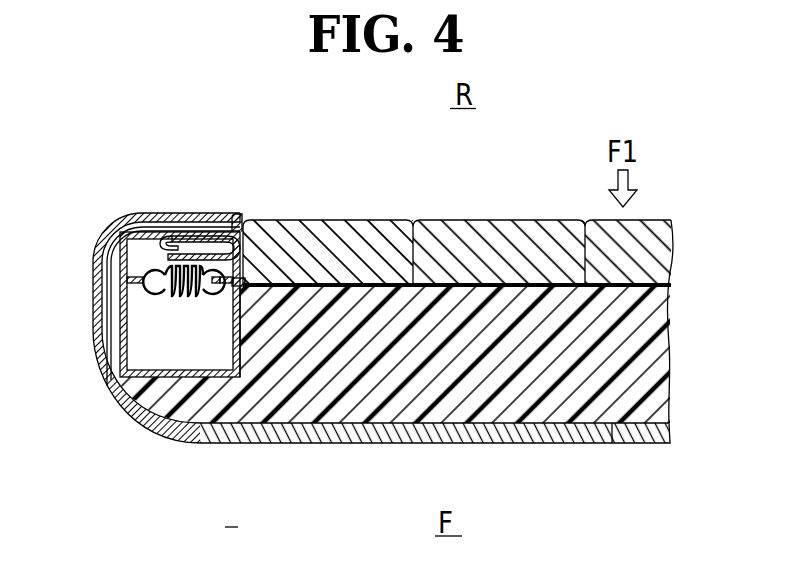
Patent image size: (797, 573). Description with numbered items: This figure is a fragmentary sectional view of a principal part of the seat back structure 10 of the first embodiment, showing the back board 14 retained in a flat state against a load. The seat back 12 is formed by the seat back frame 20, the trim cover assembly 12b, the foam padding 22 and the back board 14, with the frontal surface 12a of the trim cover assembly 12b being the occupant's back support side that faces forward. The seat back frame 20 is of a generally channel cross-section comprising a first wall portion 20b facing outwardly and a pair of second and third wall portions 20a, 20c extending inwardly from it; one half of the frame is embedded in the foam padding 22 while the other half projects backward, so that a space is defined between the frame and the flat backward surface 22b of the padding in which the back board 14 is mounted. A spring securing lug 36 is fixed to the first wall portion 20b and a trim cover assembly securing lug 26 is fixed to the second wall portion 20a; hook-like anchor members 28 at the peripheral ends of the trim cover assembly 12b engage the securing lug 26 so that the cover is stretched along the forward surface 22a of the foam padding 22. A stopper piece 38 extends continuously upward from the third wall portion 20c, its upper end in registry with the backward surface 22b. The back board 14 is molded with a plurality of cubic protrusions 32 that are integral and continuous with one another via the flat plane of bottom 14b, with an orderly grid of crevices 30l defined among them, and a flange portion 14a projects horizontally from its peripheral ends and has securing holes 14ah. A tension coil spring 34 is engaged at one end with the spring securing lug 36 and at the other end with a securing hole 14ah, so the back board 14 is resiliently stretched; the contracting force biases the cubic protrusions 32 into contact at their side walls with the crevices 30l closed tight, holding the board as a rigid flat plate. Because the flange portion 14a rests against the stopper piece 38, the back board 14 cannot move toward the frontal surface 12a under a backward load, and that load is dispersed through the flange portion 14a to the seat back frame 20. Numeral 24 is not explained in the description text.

The structure of seat back 10 is at (530, 172).
The seat back 12 is at (200, 445).
The frontal surface 12a is at (535, 446).
The trim cover assembly 12b is at (673, 428).
The back board 14 is at (378, 221).
The flange portion 14a is at (212, 293).
The securing hole 14ah is at (244, 232).
The flat plane of bottom 14b is at (652, 288).
The seat back frame 20 is at (97, 264).
The second wall portion 20a is at (132, 216).
The first wall portion 20b is at (114, 322).
The third wall portion 20c is at (134, 398).
The foam padding 22 is at (664, 363).
The forward surface 22a is at (613, 445).
The backward surface 22b is at (672, 230).
The lower layer 24 is at (373, 446).
The trim cover assembly securing lug 26 is at (224, 233).
The hook-like anchor member 28 is at (167, 233).
The crevice 30l is at (414, 221).
The cubic protrusion 32 is at (342, 235).
The tension coil spring 34 is at (178, 300).
The spring securing lug 36 is at (103, 243).
The stopper piece 38 is at (243, 320).